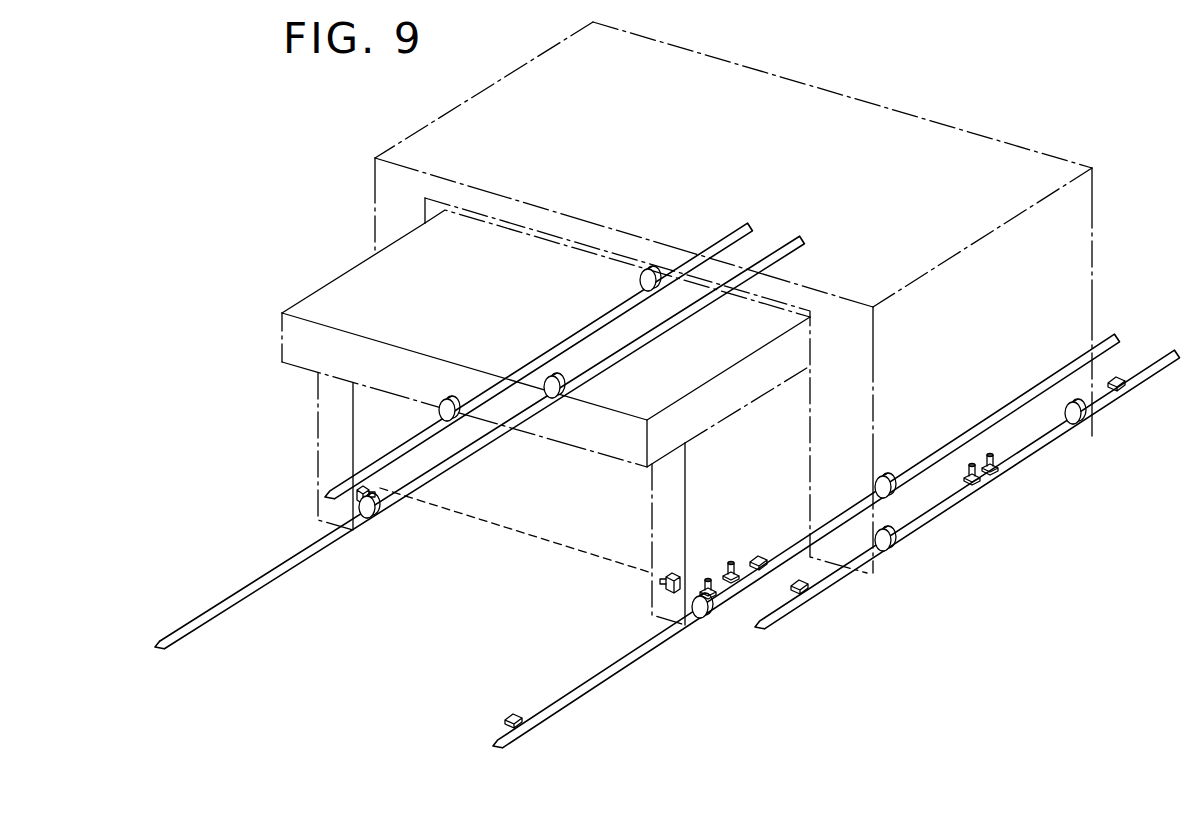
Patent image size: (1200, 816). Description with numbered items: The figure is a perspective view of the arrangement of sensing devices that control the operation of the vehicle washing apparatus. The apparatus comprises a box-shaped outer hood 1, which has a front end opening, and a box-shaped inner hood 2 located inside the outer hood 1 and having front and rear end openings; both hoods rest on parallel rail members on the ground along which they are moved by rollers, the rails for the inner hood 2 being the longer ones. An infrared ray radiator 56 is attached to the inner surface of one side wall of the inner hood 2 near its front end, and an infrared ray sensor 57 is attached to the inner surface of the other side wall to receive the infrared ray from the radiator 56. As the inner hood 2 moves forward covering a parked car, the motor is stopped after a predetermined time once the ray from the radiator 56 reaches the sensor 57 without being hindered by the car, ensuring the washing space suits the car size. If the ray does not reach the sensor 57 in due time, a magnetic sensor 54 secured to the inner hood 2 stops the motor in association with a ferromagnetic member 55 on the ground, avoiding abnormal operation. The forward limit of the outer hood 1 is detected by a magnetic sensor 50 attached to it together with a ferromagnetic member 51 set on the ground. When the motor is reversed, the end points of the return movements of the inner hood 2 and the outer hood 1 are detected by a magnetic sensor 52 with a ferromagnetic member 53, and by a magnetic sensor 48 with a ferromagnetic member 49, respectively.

The outer hood 1 is at (752, 90).
The inner hood 2 is at (350, 290).
The magnetic sensor 48 is at (997, 469).
The ferromagnetic member 49 is at (1126, 392).
The magnetic sensor 50 is at (975, 484).
The ferromagnetic member 51 is at (807, 591).
The magnetic sensor 52 is at (738, 602).
The ferromagnetic member 53 is at (765, 568).
The magnetic sensor 54 is at (710, 612).
The ferromagnetic member 55 is at (523, 723).
The infrared ray radiator 56 is at (665, 590).
The infrared ray sensor 57 is at (385, 512).